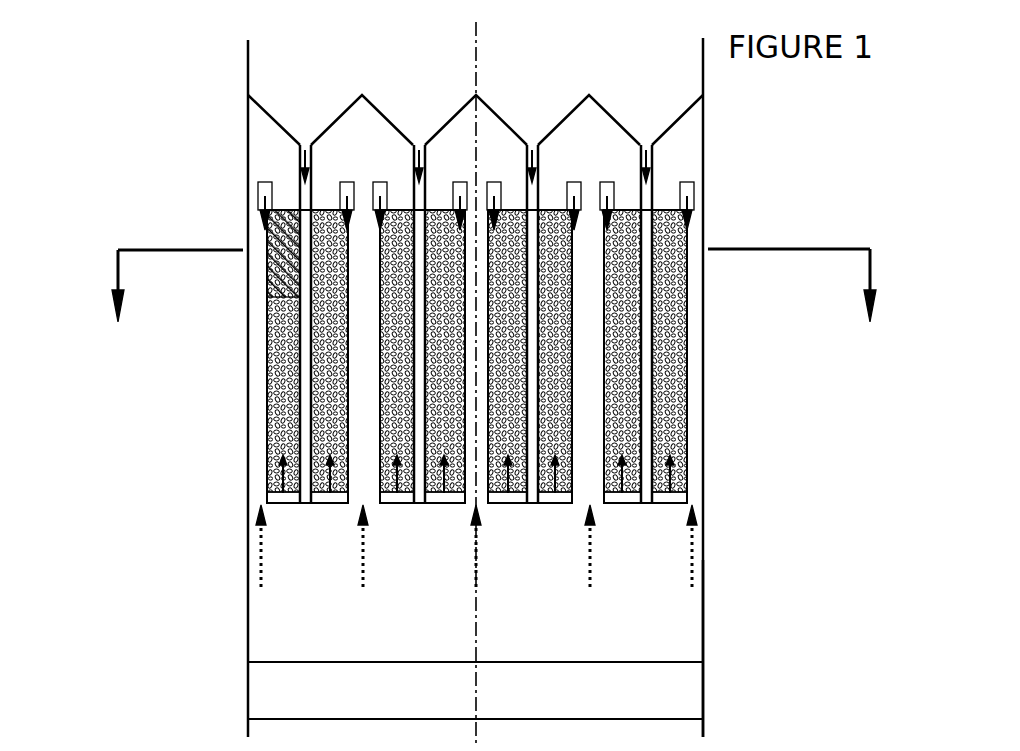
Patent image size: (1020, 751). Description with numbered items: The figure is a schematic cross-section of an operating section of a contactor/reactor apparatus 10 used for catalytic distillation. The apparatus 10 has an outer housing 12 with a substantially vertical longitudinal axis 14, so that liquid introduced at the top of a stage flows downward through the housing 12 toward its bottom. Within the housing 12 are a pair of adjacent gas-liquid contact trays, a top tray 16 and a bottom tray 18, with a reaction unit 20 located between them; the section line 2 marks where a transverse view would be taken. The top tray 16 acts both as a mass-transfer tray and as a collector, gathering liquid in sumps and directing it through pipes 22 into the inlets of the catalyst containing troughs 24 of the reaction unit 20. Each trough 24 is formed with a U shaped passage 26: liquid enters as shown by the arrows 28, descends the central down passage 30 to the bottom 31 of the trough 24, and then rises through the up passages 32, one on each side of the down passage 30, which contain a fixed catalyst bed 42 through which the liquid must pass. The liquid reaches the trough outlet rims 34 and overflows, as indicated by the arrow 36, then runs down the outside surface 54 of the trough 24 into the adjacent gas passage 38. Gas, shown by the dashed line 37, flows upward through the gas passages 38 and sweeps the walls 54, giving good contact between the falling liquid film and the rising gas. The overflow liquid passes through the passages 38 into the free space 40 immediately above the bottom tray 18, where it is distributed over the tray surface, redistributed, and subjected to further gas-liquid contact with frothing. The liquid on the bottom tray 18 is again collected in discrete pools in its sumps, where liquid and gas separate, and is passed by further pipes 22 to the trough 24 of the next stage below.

The section line 2- 2 is at (497, 288).
The contactor/reactor apparatus 10 is at (703, 92).
The outer housing 12 is at (703, 614).
The longitudinal axis 14 is at (480, 47).
The top tray 16 is at (343, 112).
The bottom tray 18 is at (248, 662).
The reaction unit 20 is at (267, 280).
The pipes 22 is at (640, 152).
The catalyst containing trough 24 is at (267, 370).
The U shaped passage 26 is at (267, 243).
The liquid inlet arrow 28 is at (533, 167).
The down passage 30 is at (267, 307).
The bottom of trough 31 is at (271, 505).
The up passage 32 is at (267, 428).
The trough outlet rim 34 is at (342, 203).
The overflow arrow 36 is at (697, 212).
The gas flow dash line 37 is at (692, 567).
The gas passage 38 is at (590, 477).
The free space 40 is at (535, 568).
The fixed catalyst bed 42 is at (687, 365).
The outside surface of trough 54 is at (605, 333).